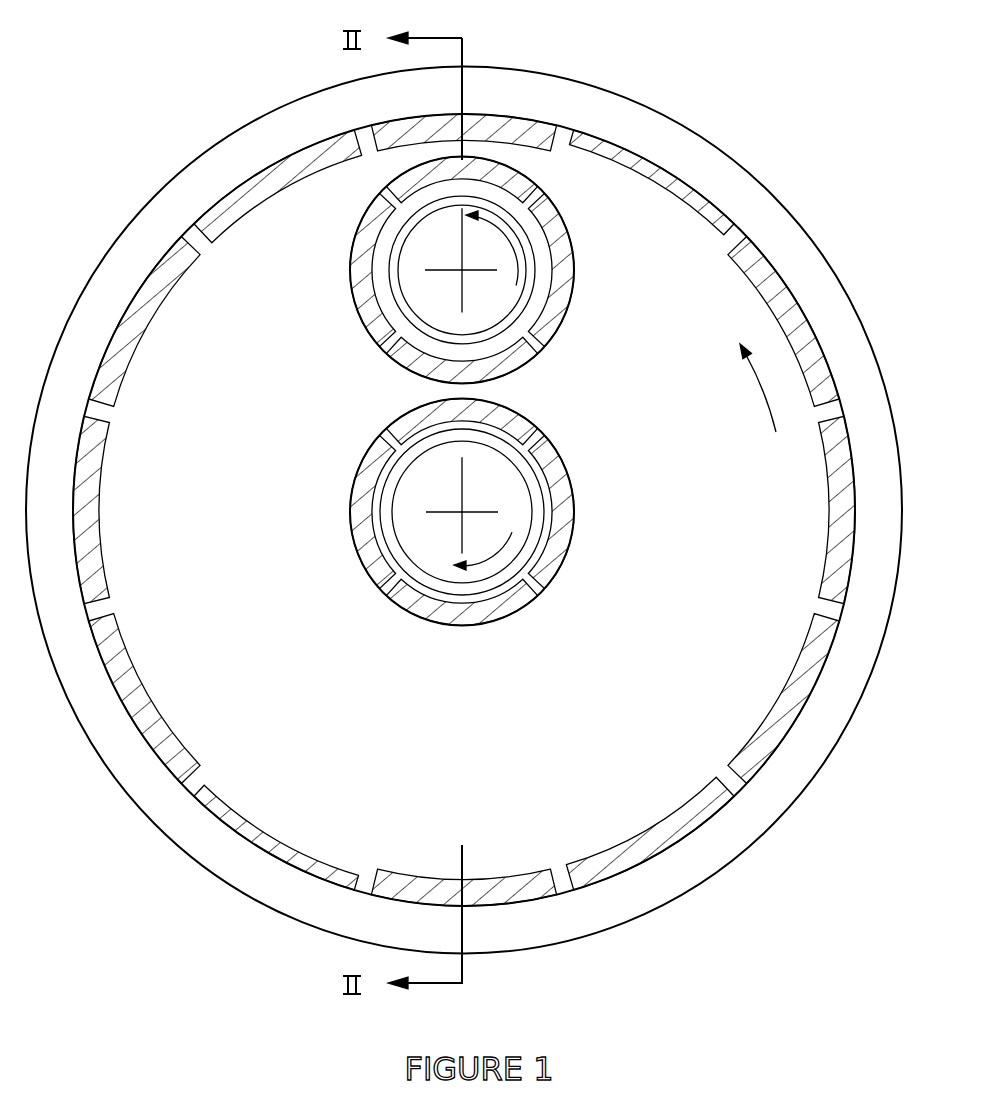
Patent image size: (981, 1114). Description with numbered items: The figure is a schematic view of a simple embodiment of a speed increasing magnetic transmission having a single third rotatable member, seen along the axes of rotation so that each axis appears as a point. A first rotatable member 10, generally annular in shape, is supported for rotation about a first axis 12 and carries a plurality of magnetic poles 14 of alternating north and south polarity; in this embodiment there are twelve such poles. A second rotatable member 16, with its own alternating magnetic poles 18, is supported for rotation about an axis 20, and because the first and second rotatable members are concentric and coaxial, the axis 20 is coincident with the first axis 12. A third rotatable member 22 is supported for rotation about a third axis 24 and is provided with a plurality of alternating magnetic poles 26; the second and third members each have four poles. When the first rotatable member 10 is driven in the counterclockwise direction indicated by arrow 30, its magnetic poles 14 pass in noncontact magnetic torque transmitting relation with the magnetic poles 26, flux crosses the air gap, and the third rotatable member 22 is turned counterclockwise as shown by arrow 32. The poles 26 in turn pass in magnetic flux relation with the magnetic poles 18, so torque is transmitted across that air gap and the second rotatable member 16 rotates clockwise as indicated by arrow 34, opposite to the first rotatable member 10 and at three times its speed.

The first rotatable member 10 is at (805, 752).
The first axis 12 is at (440, 537).
The magnetic poles 14 is at (523, 128).
The second rotatable member 16 is at (535, 468).
The magnetic poles 18 is at (360, 533).
The axis 20 is at (462, 512).
The third rotatable member 22 is at (527, 312).
The third axis 24 is at (462, 270).
The magnetic poles 26 is at (355, 258).
The arrow 30 is at (741, 402).
The arrow 32 is at (498, 229).
The arrow 34 is at (507, 550).